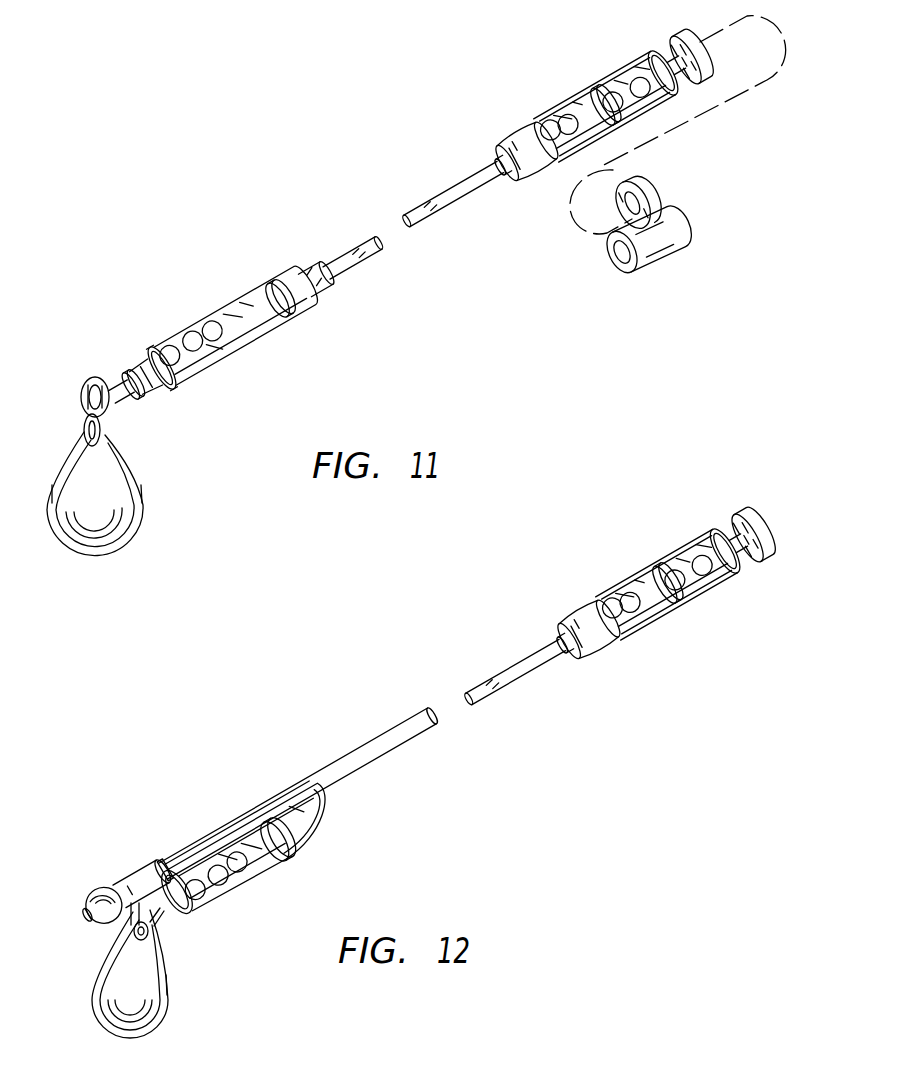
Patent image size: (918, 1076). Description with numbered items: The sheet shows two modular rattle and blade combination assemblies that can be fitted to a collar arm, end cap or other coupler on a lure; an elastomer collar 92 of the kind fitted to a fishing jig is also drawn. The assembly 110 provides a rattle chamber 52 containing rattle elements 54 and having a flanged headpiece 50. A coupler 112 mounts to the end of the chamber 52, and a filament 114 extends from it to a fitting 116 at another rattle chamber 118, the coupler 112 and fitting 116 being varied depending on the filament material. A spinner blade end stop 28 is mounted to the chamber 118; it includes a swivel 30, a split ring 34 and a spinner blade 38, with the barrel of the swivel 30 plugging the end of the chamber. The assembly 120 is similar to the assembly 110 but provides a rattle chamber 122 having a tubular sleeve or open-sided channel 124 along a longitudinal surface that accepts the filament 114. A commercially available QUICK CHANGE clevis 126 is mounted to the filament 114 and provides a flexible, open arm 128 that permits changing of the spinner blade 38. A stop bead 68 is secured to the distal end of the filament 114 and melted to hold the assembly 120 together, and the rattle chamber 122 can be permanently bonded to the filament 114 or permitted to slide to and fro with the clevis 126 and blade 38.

In FIG. 11, the spinner blade end stop 28 is at (120, 352).
In FIG. 11, the swivel 30 is at (128, 396).
In FIG. 11, the split ring 34 is at (82, 386).
In FIG. 11, the spinner blade 38 is at (136, 474).
In FIG. 12, the spinner blade 38 is at (170, 988).
In FIG. 11, the flanged headpiece 50 is at (714, 57).
In FIG. 12, the flanged headpiece 50 is at (768, 510).
In FIG. 11, the rattle chamber 52 is at (647, 50).
In FIG. 12, the rattle chamber 52 is at (703, 527).
In FIG. 11, the balls 54 is at (624, 96).
In FIG. 12, the balls 54 is at (680, 553).
In FIG. 12, the stop bead 68 is at (100, 889).
In FIG. 11, the elastomer collar 92 is at (653, 267).
In FIG. 11, the assembly 110 is at (325, 140).
In FIG. 11, the coupler 112 is at (540, 130).
In FIG. 12, the coupler 112 is at (575, 600).
In FIG. 11, the filament 114 is at (362, 243).
In FIG. 12, the filament 114 is at (529, 653).
In FIG. 11, the fitting 116 is at (302, 270).
In FIG. 11, the rattle chamber 118 is at (264, 280).
In FIG. 12, the assembly 120 is at (355, 672).
In FIG. 12, the rattle chamber 122 is at (319, 818).
In FIG. 12, the tubular sleeve or open-sided channel 124 is at (243, 817).
In FIG. 12, the QUICK CHANGE clevis 126 is at (143, 873).
In FIG. 12, the flexible open arm 128 is at (158, 916).